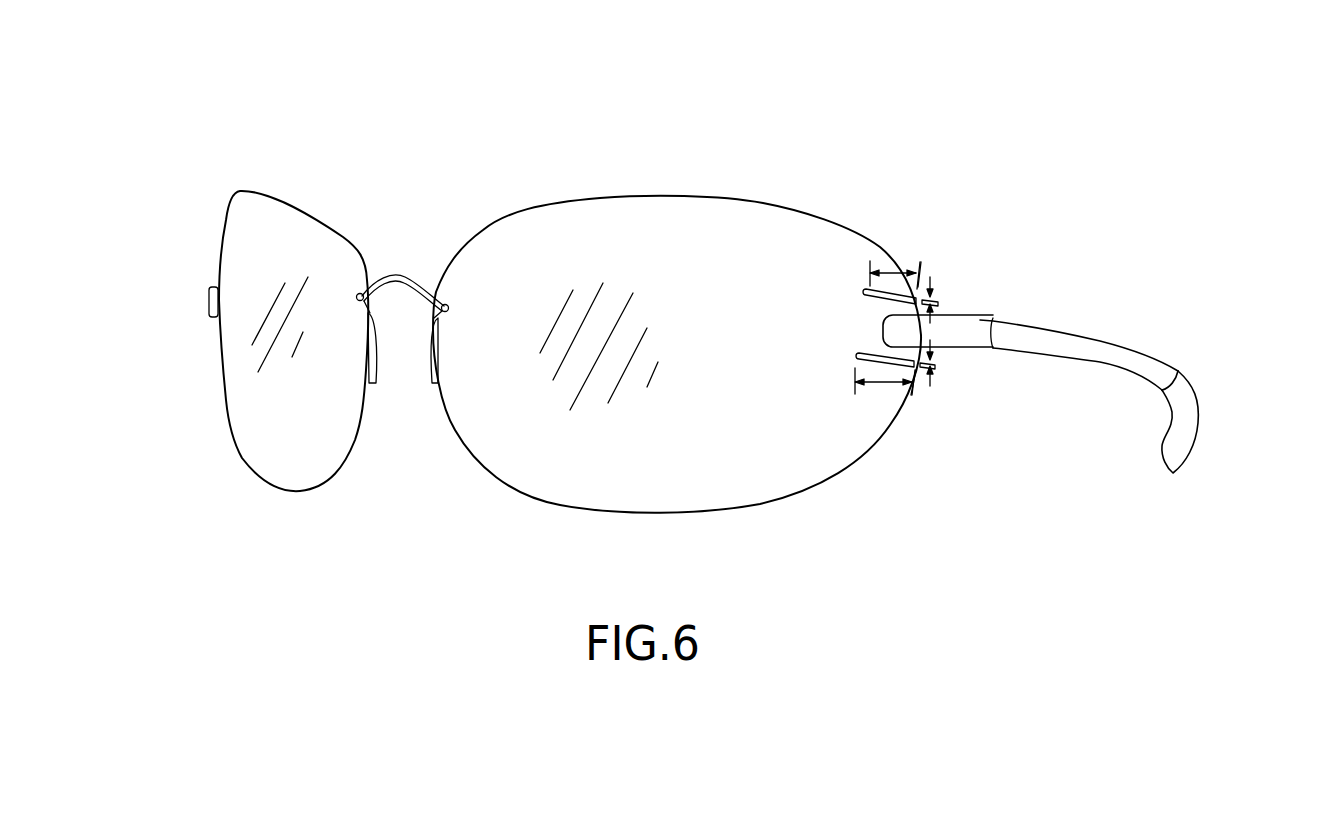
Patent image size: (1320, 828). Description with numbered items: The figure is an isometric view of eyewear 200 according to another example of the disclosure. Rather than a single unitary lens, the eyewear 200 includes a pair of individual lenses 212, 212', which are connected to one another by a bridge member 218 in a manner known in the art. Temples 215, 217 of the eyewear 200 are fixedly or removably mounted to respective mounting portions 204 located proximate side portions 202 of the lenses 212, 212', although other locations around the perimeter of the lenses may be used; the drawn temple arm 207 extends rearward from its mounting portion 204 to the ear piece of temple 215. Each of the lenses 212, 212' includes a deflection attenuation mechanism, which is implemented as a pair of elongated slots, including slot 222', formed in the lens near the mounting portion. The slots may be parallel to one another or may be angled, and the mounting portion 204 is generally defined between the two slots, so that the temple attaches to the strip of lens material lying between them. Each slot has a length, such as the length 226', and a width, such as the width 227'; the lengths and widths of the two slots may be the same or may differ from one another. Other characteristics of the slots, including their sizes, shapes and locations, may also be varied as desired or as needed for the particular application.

The eyewear 200 is at (1058, 115).
The side portion 202 is at (923, 502).
The mounting portion 204 is at (861, 314).
The temple 207 is at (980, 342).
The lens 212 is at (676, 387).
The lens 212' is at (298, 369).
The temple 215 is at (1193, 423).
The temple 217 is at (211, 307).
The bridge member 218 is at (414, 242).
The elongated slot 222' is at (957, 246).
The length 226' is at (900, 254).
The width 227' is at (977, 299).